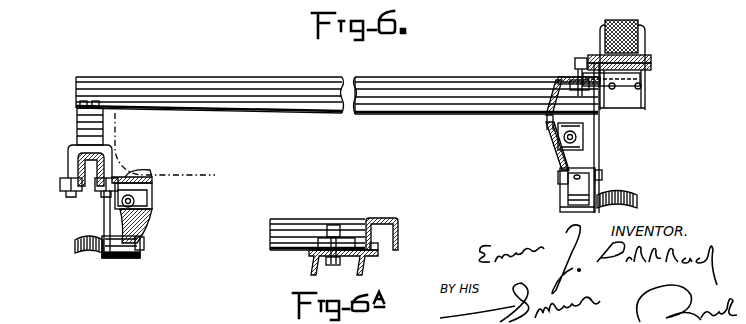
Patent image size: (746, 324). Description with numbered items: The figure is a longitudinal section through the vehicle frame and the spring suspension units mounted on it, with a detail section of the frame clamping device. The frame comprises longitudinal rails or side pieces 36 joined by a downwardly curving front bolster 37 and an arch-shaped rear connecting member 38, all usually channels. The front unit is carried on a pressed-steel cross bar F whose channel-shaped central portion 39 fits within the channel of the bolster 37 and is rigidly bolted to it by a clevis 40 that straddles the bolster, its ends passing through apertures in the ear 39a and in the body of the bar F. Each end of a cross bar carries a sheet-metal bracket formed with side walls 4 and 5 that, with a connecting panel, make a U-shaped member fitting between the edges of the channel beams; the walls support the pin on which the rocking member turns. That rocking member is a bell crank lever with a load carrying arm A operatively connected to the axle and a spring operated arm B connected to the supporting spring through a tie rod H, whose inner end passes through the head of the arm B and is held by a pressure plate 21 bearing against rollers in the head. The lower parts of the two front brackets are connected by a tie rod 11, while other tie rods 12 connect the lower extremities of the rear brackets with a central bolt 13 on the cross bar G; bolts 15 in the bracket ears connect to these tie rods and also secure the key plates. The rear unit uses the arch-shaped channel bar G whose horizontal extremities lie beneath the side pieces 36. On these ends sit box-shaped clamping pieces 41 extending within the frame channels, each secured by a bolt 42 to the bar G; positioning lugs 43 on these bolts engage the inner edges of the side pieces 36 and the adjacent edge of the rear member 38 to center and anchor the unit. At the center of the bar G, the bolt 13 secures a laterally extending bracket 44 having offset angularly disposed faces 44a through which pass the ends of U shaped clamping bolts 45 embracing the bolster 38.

In FIG. 6, the side piece 36 is at (330, 118).
In FIG. 6A, the side piece 36 is at (322, 233).
In FIG. 6, the clevis 40 is at (75, 160).
In FIG. 6, the front bolster 37 is at (70, 172).
In FIG. 6, the central portion 39 is at (96, 183).
In FIG. 6, the ear 39a is at (82, 185).
In FIG. 6, the cross bar F is at (136, 181).
In FIG. 6, the pressure plate 21 is at (152, 190).
In FIG. 6, the tie rod H is at (145, 200).
In FIG. 6, the spring operated arm B is at (142, 222).
In FIG. 6, the tie rod 11 is at (128, 259).
In FIG. 6, the bolt 15 is at (144, 243).
In FIG. 6, the load carrying arm A is at (92, 258).
In FIG. 6, the rear connecting member 38 is at (640, 30).
In FIG. 6A, the rear connecting member 38 is at (398, 229).
In FIG. 6, the U shaped clamping bolt 45 is at (650, 56).
In FIG. 6, the central bolt 13 is at (580, 57).
In FIG. 6, the bracket 44 is at (627, 71).
In FIG. 6, the angularly disposed face 44a is at (640, 70).
In FIG. 6, the cross bar G is at (557, 79).
In FIG. 6, the side wall 4 is at (600, 155).
In FIG. 6, the side wall 5 is at (558, 158).
In FIG. 6, the tie rod 12 is at (590, 176).
In FIG. 6A, the clamping piece 41 is at (312, 251).
In FIG. 6A, the bolt 42 is at (338, 234).
In FIG. 6A, the positioning lug 43 is at (378, 251).